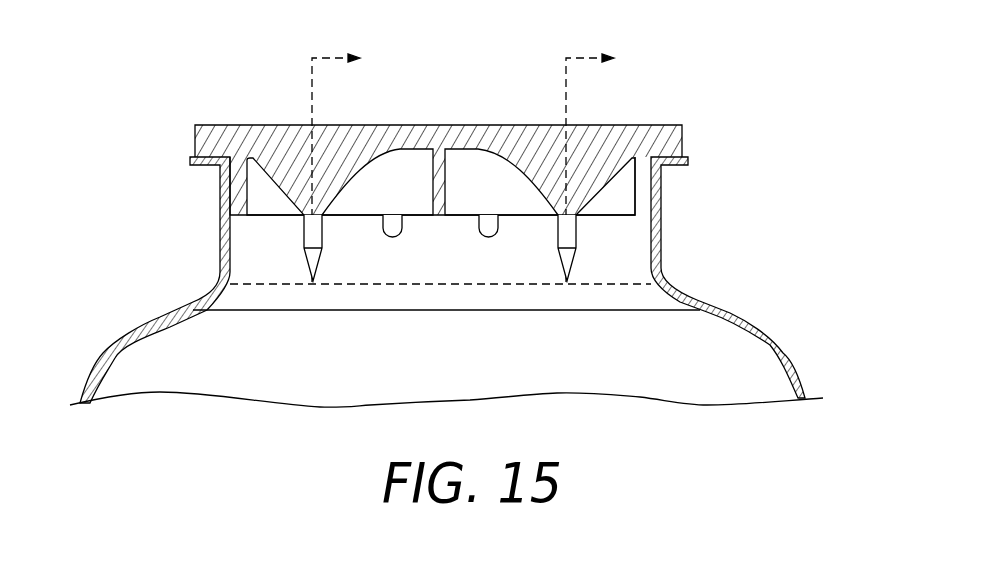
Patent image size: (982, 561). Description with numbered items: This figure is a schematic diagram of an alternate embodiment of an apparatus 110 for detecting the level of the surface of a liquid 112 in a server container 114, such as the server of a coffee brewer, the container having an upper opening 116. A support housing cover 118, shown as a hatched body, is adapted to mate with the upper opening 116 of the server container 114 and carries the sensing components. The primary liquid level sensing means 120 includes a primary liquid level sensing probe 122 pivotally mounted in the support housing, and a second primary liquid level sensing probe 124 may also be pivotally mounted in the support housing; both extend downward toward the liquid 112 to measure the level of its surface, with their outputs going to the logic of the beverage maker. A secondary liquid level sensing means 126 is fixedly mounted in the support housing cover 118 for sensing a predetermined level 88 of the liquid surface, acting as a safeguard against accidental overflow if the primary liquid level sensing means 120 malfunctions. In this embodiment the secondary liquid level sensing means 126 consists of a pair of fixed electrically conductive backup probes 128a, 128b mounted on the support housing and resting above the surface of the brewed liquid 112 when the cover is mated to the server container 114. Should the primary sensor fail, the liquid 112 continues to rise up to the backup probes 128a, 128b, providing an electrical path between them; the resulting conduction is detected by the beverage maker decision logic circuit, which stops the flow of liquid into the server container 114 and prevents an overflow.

The apparatus 110 is at (728, 147).
The liquid 112 is at (257, 311).
The server container 114 is at (782, 348).
The upper opening 116 is at (627, 233).
The support housing cover 118 is at (195, 136).
The primary liquid level sensing means 120 is at (278, 235).
The primary liquid level sensing probe 122 is at (312, 267).
The second primary liquid level sensing probe 124 is at (573, 265).
The secondary liquid level sensing means 126 is at (433, 273).
The fixed electrically conductive backup probe 128a is at (392, 237).
The fixed electrically conductive backup probe 128b is at (488, 237).
The predetermined level 88 is at (608, 285).